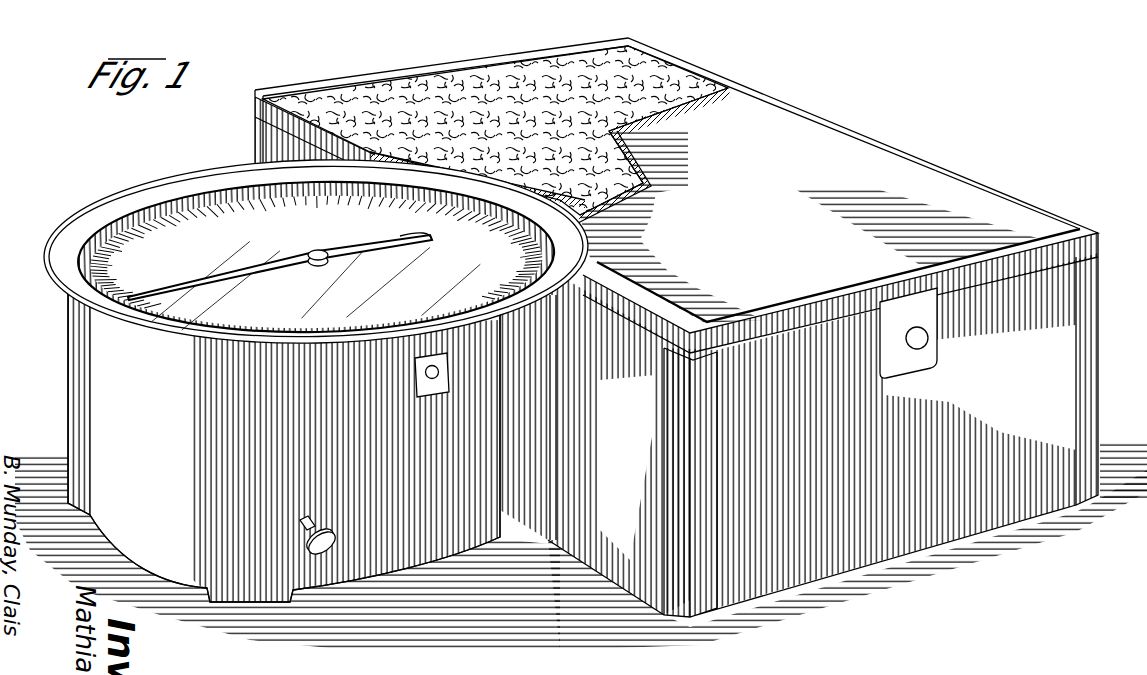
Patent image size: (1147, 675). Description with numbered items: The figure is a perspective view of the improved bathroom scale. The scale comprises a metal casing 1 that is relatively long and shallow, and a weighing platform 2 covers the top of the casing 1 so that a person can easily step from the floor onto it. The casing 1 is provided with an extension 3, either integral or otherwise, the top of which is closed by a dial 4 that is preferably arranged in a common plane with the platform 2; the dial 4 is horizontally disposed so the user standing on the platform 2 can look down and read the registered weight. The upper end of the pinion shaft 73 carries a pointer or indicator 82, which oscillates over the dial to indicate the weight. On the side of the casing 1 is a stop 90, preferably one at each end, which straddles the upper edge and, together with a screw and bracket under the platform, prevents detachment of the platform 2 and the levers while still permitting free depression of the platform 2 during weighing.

The metal casing 1 is at (1052, 334).
The weighing platform 2 is at (907, 185).
The extension 3 is at (406, 530).
The dial 4 is at (243, 300).
The pinion shaft 73 is at (313, 251).
The pointer or indicator 82 is at (293, 268).
The stop 90 is at (930, 340).